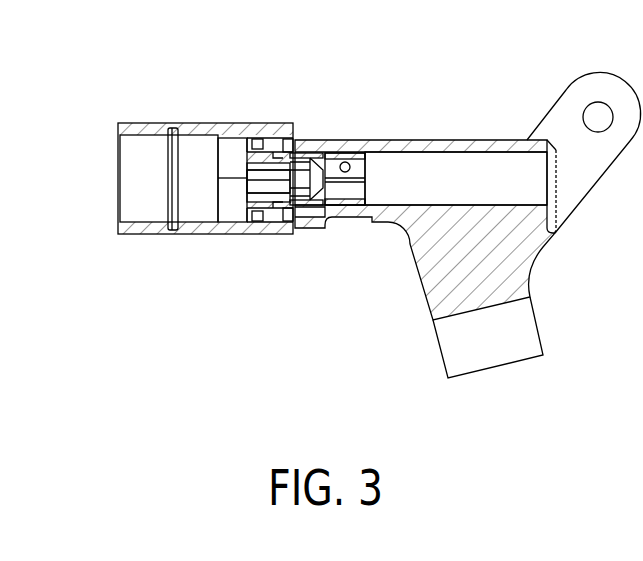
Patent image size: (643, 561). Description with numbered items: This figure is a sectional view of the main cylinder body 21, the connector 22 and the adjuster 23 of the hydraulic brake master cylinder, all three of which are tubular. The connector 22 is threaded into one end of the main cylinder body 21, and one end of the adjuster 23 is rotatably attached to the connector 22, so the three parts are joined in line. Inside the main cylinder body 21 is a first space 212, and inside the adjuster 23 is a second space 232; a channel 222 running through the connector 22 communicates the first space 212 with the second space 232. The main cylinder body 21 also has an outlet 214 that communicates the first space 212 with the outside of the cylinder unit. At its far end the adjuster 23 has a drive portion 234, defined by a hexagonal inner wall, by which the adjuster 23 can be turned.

The main cylinder body 21 is at (409, 139).
The first space 212 is at (452, 170).
The outlet 214 is at (345, 158).
The connector 22 is at (242, 199).
The channel 222 is at (270, 180).
The adjuster 23 is at (198, 121).
The second space 232 is at (188, 177).
The drive portion 234 is at (235, 152).